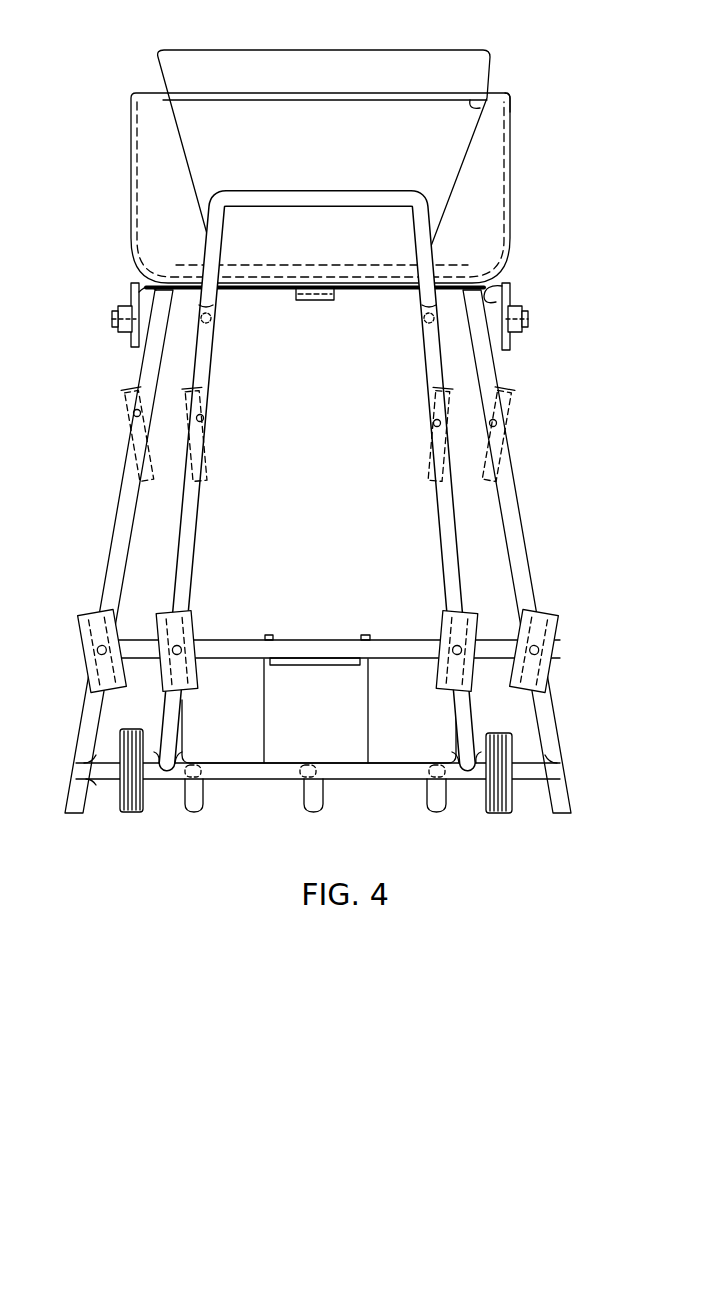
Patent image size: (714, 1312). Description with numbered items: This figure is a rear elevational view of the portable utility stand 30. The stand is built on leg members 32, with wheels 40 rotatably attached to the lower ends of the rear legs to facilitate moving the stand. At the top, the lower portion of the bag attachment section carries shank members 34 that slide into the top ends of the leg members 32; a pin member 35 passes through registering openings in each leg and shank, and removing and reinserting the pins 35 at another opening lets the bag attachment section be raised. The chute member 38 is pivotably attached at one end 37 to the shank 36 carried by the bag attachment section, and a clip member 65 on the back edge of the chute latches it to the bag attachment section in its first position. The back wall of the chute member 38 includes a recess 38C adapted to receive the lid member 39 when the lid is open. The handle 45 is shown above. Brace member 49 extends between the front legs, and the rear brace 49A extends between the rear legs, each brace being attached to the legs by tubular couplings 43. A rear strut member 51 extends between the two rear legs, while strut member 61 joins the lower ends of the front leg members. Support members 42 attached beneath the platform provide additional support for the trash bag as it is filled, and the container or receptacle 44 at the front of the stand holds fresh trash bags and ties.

The portable utility stand 30 is at (540, 190).
The leg members 32 is at (128, 513).
The shank members 34 is at (128, 431).
The pin member 35 is at (206, 417).
The shank 36 is at (117, 326).
The end of chute member 37 is at (132, 291).
The chute member 38 is at (133, 150).
The recess 38C is at (482, 108).
The lid member 39 is at (340, 70).
The wheels 40 is at (132, 804).
The support members 42 is at (318, 807).
The tubular coupling 43 is at (90, 629).
The container or receptacle 44 is at (366, 712).
The handle 45 is at (303, 201).
The brace member 49 is at (133, 640).
The rear brace 49A is at (300, 640).
The rear strut member 51 is at (225, 778).
The strut member 61 is at (100, 772).
The clip member 65 is at (320, 293).